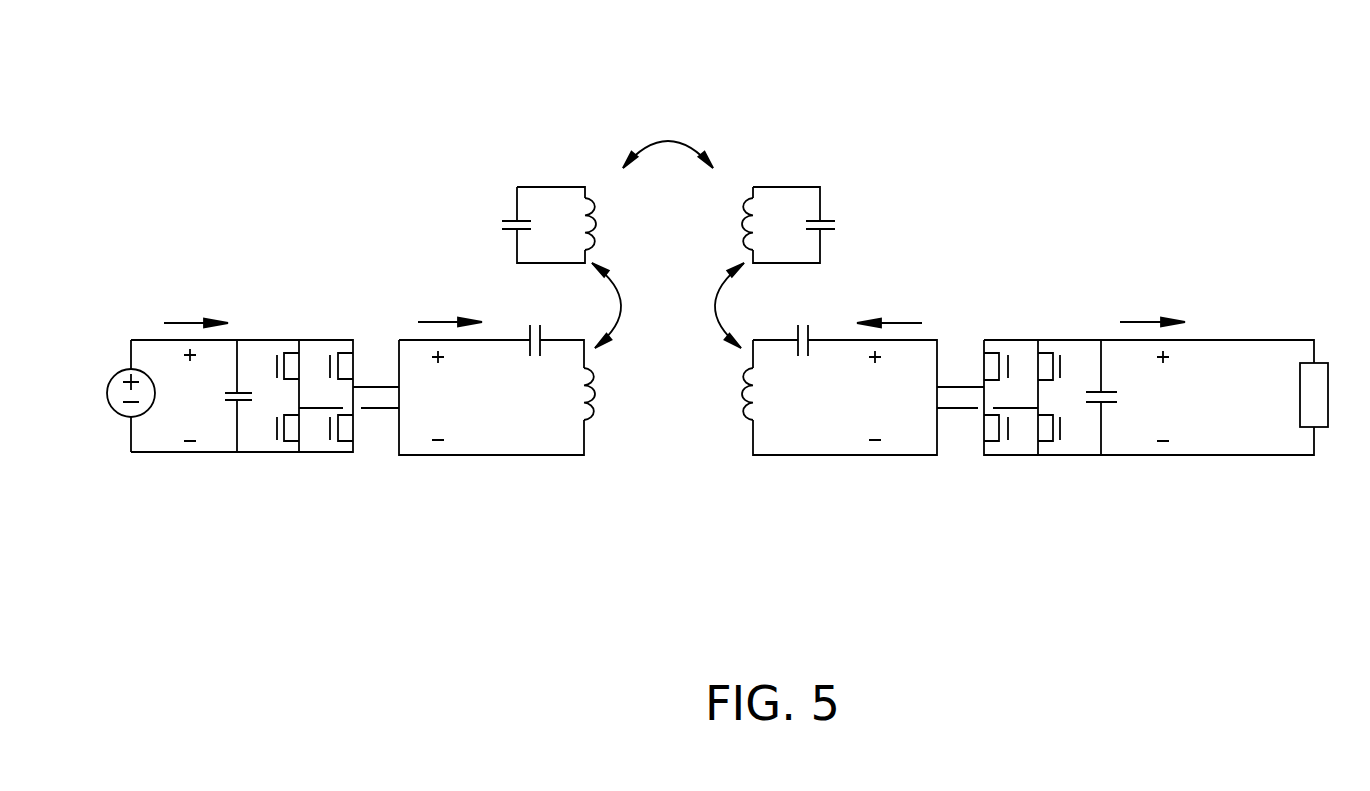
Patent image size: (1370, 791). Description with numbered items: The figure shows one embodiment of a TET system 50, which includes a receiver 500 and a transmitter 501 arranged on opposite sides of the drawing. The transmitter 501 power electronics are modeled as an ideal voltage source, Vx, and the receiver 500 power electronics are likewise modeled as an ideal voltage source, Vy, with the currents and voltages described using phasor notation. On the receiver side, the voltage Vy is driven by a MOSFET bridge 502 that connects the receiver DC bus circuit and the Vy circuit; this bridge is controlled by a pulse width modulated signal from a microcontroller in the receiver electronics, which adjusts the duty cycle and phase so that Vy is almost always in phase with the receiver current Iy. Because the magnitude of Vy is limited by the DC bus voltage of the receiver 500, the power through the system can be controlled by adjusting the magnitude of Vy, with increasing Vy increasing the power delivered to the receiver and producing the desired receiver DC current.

The TET system 50 is at (719, 305).
The receiver 500 is at (1011, 361).
The transmitter 501 is at (333, 262).
The MOSFET bridge 502 is at (970, 482).